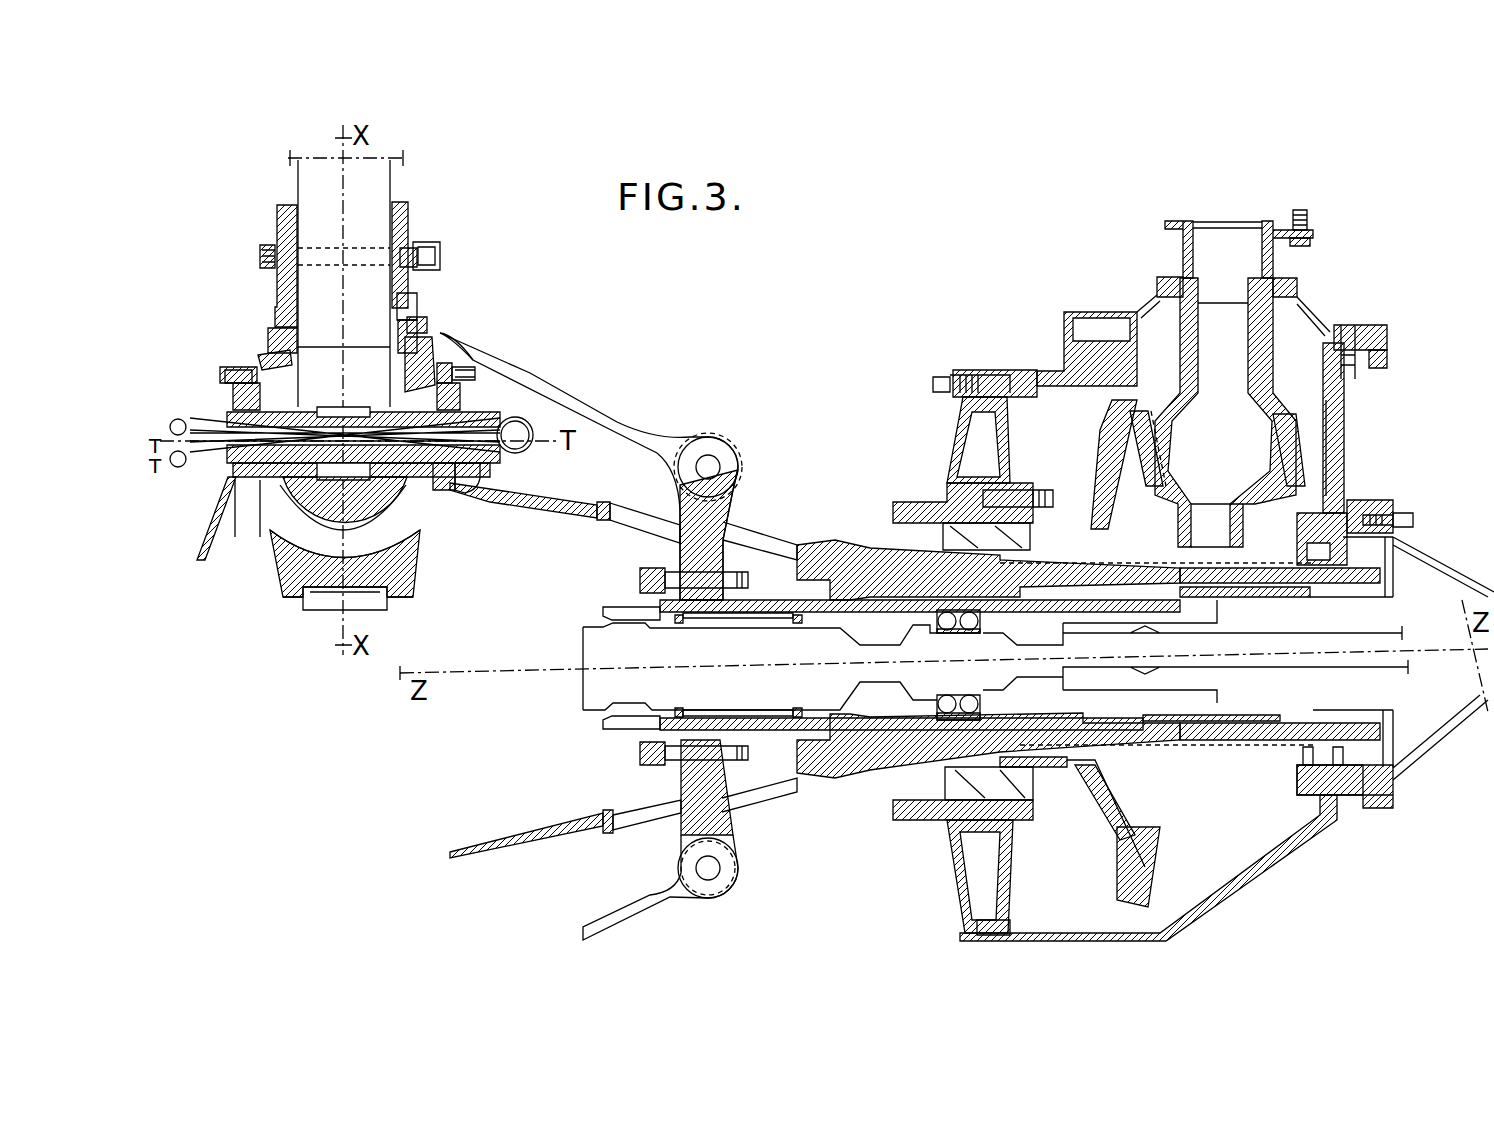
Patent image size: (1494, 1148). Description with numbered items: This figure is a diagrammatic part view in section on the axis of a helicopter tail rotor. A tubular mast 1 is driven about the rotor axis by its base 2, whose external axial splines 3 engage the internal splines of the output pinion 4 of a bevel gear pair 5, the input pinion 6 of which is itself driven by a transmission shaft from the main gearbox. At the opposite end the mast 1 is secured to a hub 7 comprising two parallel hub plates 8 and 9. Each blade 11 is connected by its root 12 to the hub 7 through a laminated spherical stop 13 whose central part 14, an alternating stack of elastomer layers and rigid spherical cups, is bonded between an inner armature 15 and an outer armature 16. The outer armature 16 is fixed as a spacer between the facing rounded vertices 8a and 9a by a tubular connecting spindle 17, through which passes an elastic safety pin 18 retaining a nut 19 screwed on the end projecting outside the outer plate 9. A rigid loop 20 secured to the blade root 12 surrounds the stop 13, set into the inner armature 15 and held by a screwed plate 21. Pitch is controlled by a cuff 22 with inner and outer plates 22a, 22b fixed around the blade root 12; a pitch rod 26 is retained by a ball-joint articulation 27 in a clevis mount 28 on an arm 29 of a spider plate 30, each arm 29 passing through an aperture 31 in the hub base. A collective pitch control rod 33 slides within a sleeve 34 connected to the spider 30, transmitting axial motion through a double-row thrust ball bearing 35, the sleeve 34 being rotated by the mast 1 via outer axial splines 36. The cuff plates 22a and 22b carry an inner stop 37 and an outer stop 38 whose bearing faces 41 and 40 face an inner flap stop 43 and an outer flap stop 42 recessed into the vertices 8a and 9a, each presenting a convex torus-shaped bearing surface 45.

The tubular mast 1 is at (843, 795).
The base 2 is at (1143, 737).
The external axial splines 3 is at (1092, 762).
The output pinion 4 is at (1150, 850).
The bevel gear pair 5 is at (1099, 439).
The input pinion 6 is at (1290, 452).
The hub 7 is at (585, 498).
The inner hub plate 8 is at (445, 492).
The rounded vertex of inner hub plate 8a is at (467, 395).
The outer hub plate 9 is at (243, 510).
The rounded vertex of outer hub plate 9a is at (233, 407).
The blade 11 is at (406, 177).
The blade root 12 is at (312, 175).
The laminated spherical stop 13 is at (421, 577).
The central part 14 is at (307, 527).
The inner armature 15 is at (300, 573).
The outer armature 16 is at (413, 528).
The connecting spindle 17 is at (483, 480).
The elastic safety pin 18 is at (528, 447).
The nut 19 is at (210, 420).
The rigid loop 20 is at (365, 355).
The plate 21 is at (403, 597).
The cuff 22 is at (271, 227).
The inner plate of cuff 22a is at (410, 208).
The outer plate of cuff 22b is at (288, 205).
The pitch rod 26 is at (637, 432).
The ball-joint articulation 27 is at (708, 463).
The clevis mount 28 is at (730, 502).
The arm 29 is at (700, 535).
The spider plate 30 is at (660, 733).
The aperture 31 is at (640, 520).
The collective pitch control rod 33 is at (1335, 637).
The sleeve 34 is at (807, 730).
The double-row thrust ball bearing 35 is at (930, 705).
The outer axial splines 36 is at (1275, 727).
The inner stop 37 is at (418, 348).
The outer stop 38 is at (266, 341).
The bearing face 40 is at (298, 373).
The bearing face 41 is at (428, 345).
The outer flap stop 42 is at (230, 373).
The inner flap stop 43 is at (460, 368).
The bearing surface 45 is at (253, 373).